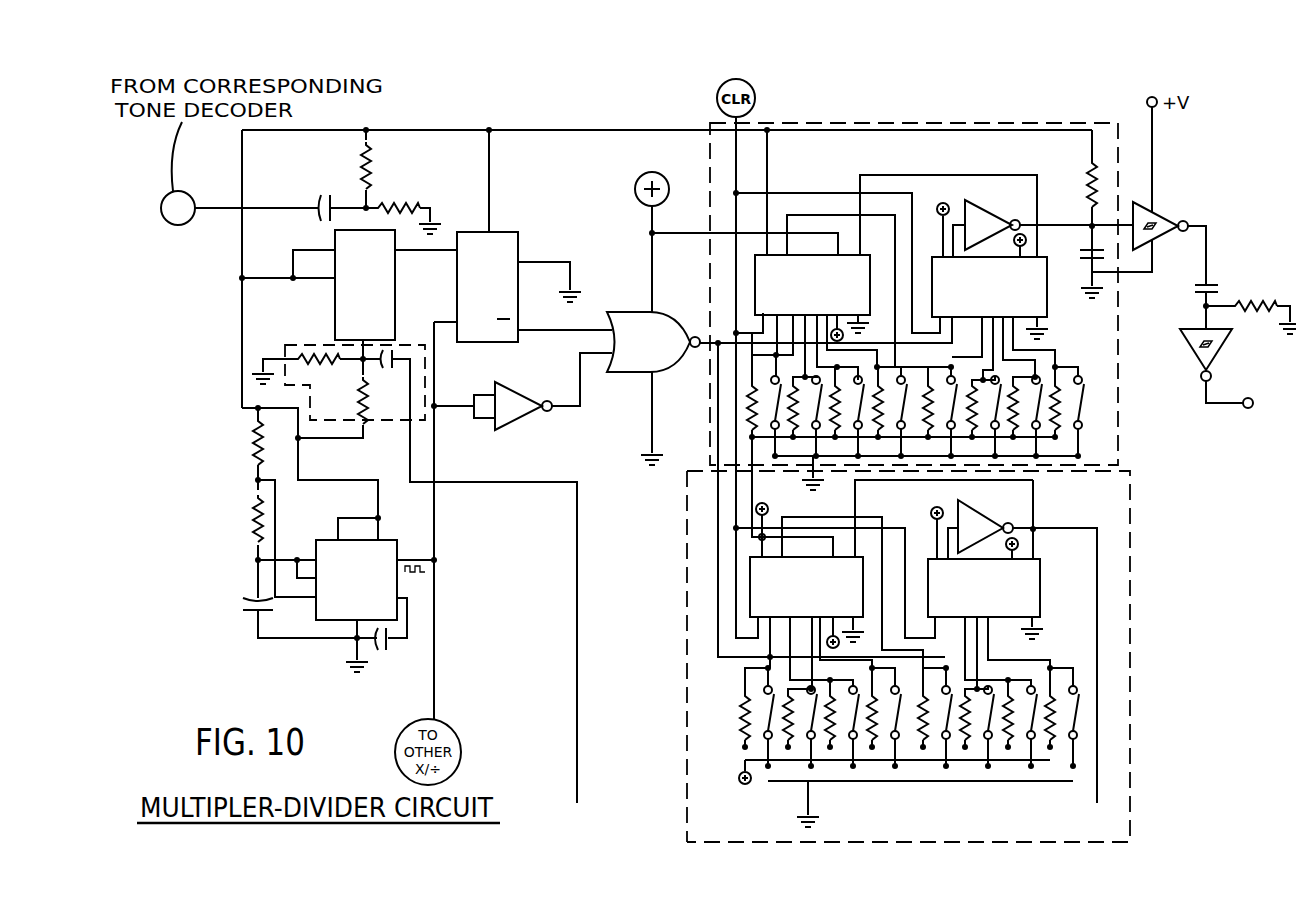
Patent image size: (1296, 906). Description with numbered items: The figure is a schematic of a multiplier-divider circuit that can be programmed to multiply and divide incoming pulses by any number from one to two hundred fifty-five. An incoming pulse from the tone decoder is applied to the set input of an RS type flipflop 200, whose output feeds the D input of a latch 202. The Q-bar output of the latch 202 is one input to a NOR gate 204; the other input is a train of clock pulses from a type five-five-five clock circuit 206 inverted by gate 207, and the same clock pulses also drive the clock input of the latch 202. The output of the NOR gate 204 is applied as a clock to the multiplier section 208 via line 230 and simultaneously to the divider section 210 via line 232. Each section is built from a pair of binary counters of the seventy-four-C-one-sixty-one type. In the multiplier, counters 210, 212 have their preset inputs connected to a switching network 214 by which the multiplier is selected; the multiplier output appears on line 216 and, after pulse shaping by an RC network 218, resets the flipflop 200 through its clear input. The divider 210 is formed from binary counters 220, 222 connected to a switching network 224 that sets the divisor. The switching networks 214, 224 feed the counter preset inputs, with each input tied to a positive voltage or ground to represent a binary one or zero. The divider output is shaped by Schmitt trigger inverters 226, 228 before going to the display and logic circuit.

The RS type flipflop 200 is at (335, 305).
The latch 202 is at (518, 238).
The NOR gate 204 is at (627, 312).
The type 555 clock circuit 206 is at (323, 540).
The gate 207 is at (522, 418).
The multiplier section 208 is at (687, 572).
The divider section 210 is at (920, 123).
The binary counter 212 is at (750, 600).
The switching network 214 is at (1105, 696).
The line 216 is at (1132, 608).
The RC network 218 is at (377, 422).
The binary counter 220 is at (753, 263).
The binary counter 222 is at (1050, 303).
The switching network 224 is at (1095, 410).
The Schmitt trigger inverter 226 is at (1163, 210).
The Schmitt trigger inverter 228 is at (1218, 355).
The line 230 is at (718, 390).
The line 232 is at (757, 343).